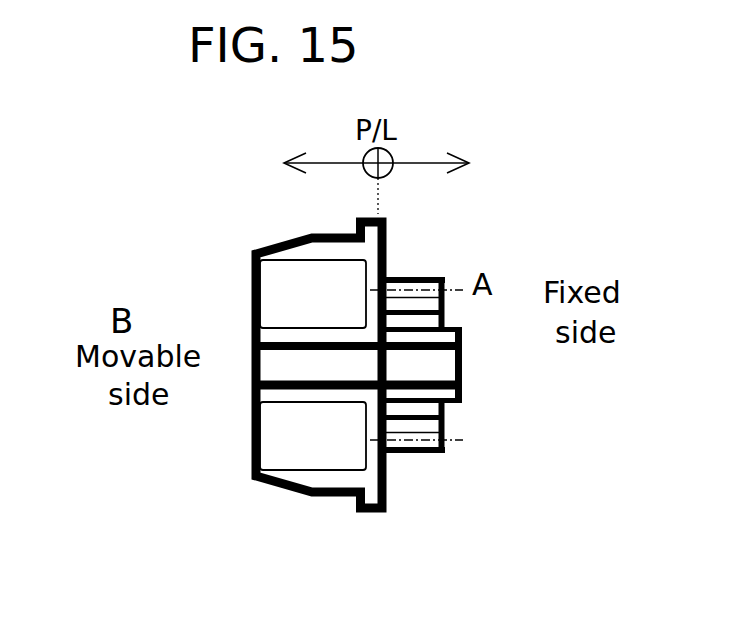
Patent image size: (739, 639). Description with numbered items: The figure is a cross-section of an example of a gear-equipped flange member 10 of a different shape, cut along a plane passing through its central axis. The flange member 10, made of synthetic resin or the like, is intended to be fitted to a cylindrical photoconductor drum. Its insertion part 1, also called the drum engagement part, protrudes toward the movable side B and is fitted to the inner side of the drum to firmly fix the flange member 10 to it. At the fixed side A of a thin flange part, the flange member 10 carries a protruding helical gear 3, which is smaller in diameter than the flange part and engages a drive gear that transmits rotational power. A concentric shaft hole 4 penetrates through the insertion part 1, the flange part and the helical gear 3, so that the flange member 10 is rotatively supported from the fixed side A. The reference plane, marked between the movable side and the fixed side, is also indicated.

The flange member 10 is at (527, 225).
The insertion part 1 is at (313, 236).
The helical gear 3 is at (377, 283).
The shaft hole 4 is at (302, 368).